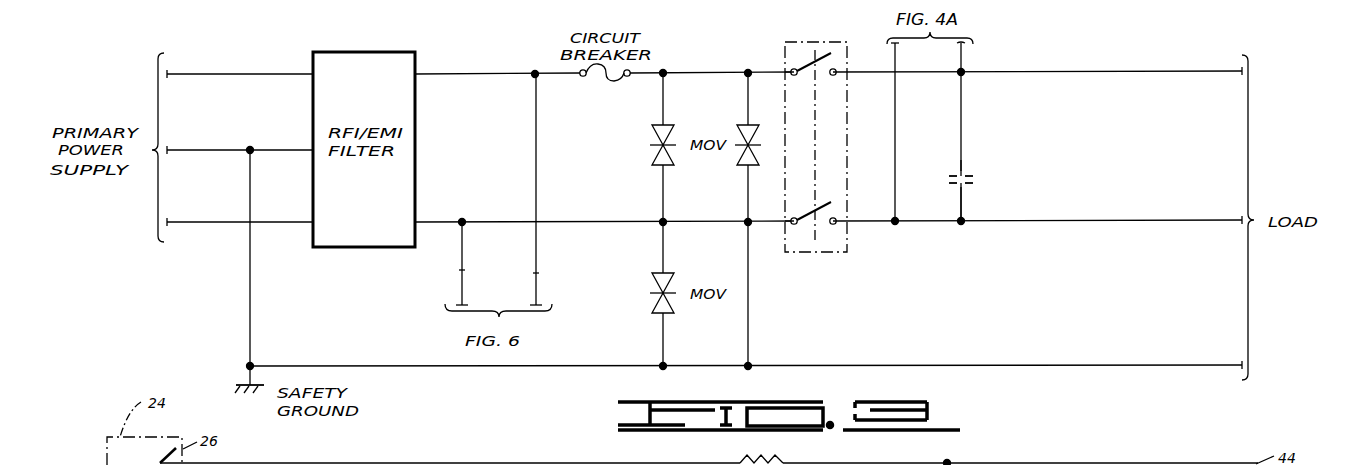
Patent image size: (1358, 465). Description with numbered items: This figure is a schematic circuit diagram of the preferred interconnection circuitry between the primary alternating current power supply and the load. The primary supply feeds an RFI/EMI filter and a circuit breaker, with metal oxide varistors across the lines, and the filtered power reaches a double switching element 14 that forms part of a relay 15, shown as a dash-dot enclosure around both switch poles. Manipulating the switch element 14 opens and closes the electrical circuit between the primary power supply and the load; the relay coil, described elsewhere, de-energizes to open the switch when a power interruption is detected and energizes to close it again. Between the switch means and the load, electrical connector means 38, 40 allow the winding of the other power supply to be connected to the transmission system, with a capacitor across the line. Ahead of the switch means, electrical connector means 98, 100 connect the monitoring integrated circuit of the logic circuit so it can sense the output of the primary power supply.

The double switching element 14 is at (813, 226).
The relay 15 is at (795, 253).
The electrical connector means 38 is at (898, 56).
The electrical connector means 40 is at (963, 57).
The electrical connector means 98 is at (538, 273).
The electrical connector means 100 is at (460, 268).